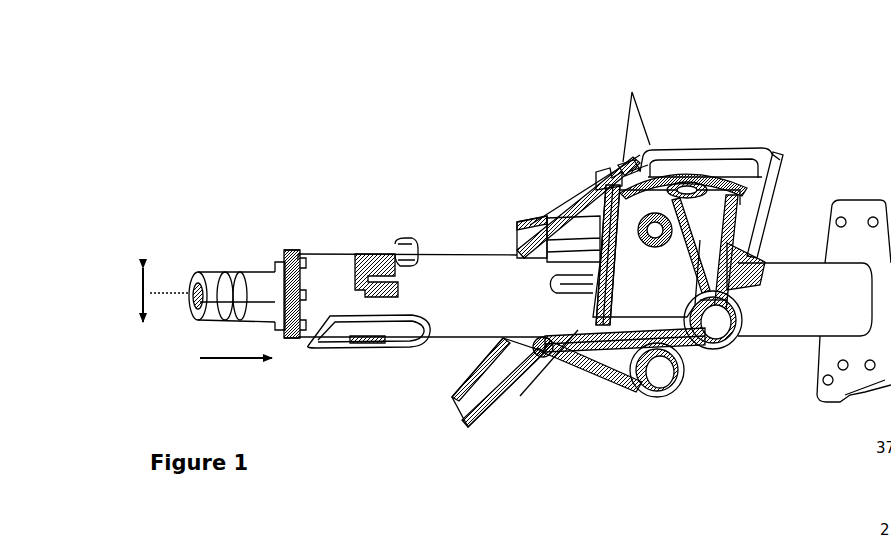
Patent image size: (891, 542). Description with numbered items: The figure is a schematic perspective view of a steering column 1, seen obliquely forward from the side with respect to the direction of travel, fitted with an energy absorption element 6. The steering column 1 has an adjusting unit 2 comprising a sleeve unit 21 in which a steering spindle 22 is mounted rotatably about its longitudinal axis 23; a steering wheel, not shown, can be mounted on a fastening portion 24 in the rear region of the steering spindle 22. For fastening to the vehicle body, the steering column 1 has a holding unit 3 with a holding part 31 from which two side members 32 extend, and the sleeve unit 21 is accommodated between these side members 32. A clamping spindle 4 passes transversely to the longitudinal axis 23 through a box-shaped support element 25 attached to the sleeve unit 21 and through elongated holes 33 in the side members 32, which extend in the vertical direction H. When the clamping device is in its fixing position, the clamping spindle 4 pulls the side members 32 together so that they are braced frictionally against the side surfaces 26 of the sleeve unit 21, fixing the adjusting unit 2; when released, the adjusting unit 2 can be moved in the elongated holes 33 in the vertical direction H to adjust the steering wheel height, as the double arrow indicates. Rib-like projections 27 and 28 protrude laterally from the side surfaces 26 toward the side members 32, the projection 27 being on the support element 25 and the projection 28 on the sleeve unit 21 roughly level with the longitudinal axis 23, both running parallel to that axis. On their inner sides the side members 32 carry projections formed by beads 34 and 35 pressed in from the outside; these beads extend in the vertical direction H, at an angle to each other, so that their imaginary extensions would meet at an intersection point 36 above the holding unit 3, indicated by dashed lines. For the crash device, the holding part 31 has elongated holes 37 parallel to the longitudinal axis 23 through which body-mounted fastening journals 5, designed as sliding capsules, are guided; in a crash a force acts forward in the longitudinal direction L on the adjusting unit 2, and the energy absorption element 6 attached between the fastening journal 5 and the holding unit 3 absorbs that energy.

The steering column 1 is at (362, 213).
The adjusting unit 2 is at (443, 247).
The holding unit 3 is at (722, 142).
The clamping spindle 4 is at (600, 186).
The fastening journals 5 is at (700, 150).
The energy absorption element 6 is at (767, 178).
The sleeve unit 21 is at (492, 255).
The steering spindle 22 is at (254, 283).
The longitudinal axis 23 is at (190, 293).
The fastening portion 24 is at (217, 290).
The support element 25 is at (528, 240).
The side surfaces 26 is at (580, 247).
The projection 27 is at (563, 240).
The projection 28 is at (545, 285).
The holding part 31 is at (748, 152).
The side members 32 is at (625, 362).
The elongated holes 33 is at (770, 238).
The bead 34 is at (600, 338).
The bead 35 is at (652, 362).
The intersection point 36 is at (632, 92).
The elongated holes 37 is at (625, 165).
The vertical direction H is at (140, 288).
The longitudinal direction L is at (228, 362).